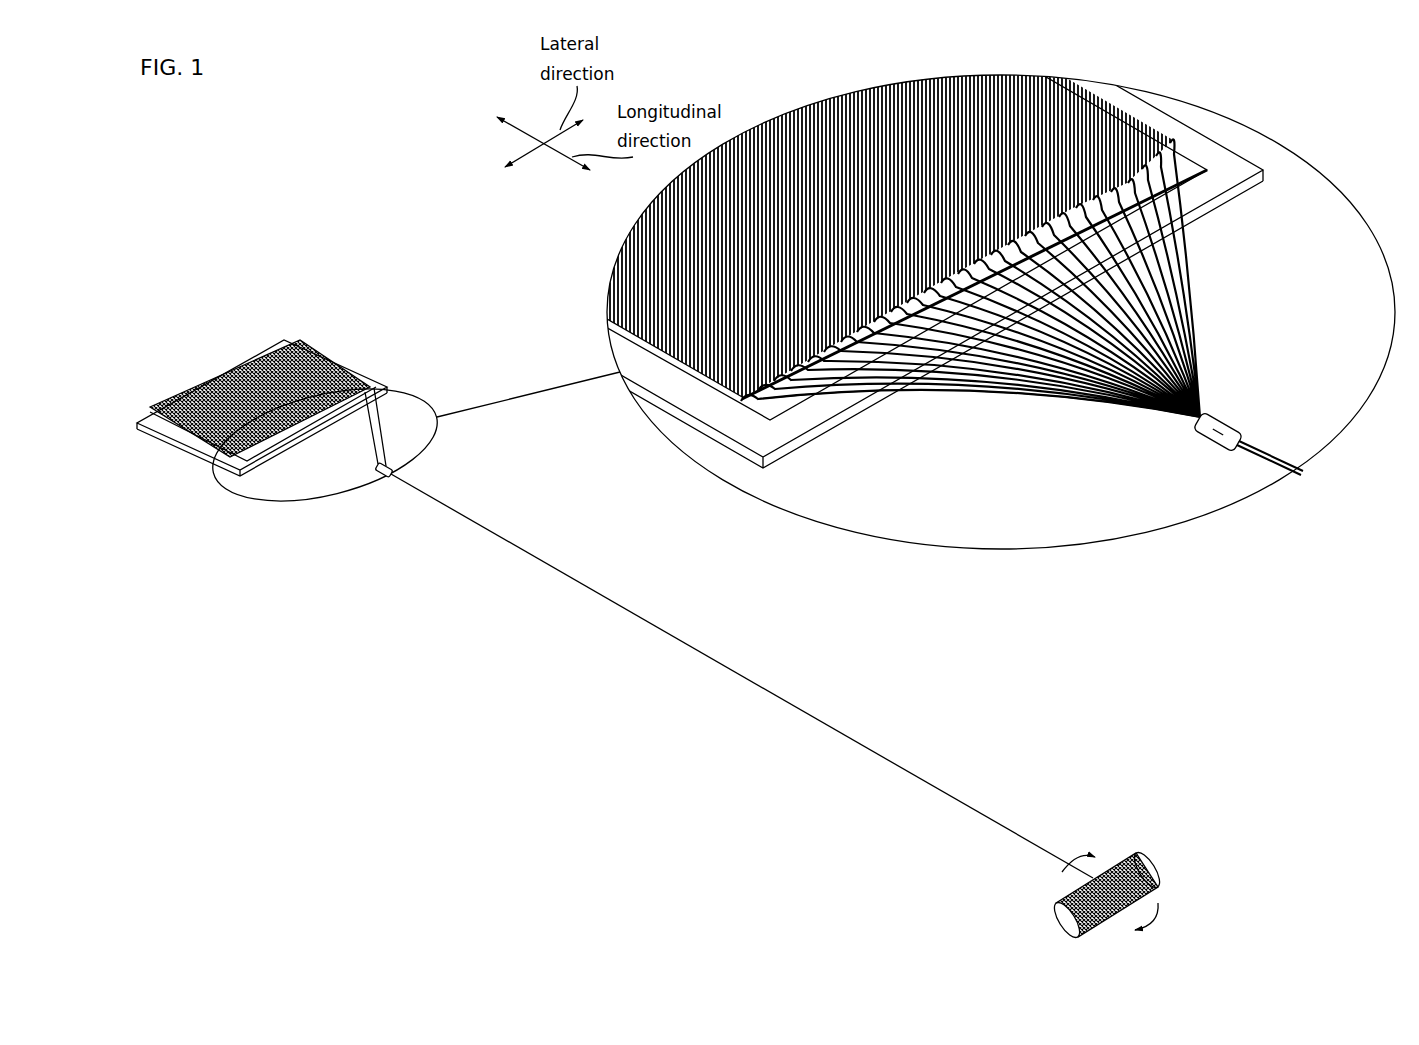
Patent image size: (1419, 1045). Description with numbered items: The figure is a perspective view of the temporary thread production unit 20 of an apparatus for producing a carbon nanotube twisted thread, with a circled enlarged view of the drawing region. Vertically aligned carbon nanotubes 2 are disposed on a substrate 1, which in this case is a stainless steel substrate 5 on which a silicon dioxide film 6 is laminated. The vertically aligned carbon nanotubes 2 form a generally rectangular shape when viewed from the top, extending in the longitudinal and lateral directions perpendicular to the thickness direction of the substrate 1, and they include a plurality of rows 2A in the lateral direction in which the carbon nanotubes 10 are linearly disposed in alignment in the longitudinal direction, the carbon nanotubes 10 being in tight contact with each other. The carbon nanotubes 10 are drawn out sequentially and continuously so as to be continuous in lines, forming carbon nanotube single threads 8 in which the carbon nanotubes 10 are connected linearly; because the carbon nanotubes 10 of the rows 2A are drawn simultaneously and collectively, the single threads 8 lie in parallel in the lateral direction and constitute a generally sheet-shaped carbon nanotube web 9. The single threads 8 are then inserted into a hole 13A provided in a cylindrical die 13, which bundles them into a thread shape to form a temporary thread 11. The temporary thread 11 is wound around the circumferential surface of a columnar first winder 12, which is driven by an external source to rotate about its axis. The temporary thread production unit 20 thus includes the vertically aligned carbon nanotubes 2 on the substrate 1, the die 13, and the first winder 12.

The substrate 1 is at (338, 343).
The vertically aligned carbon nanotubes 2 is at (213, 375).
The rows 2A is at (815, 110).
The stainless steel substrate 5 is at (793, 445).
The silicon dioxide film 6 is at (783, 398).
The carbon nanotube single thread 8 is at (1178, 328).
The carbon nanotube web 9 is at (310, 458).
The carbon nanotubes 10 is at (661, 352).
The temporary thread 11 is at (643, 620).
The first winder 12 is at (1060, 921).
The die 13 is at (377, 470).
The hole 13A is at (1210, 447).
The temporary thread production unit 20 is at (518, 843).